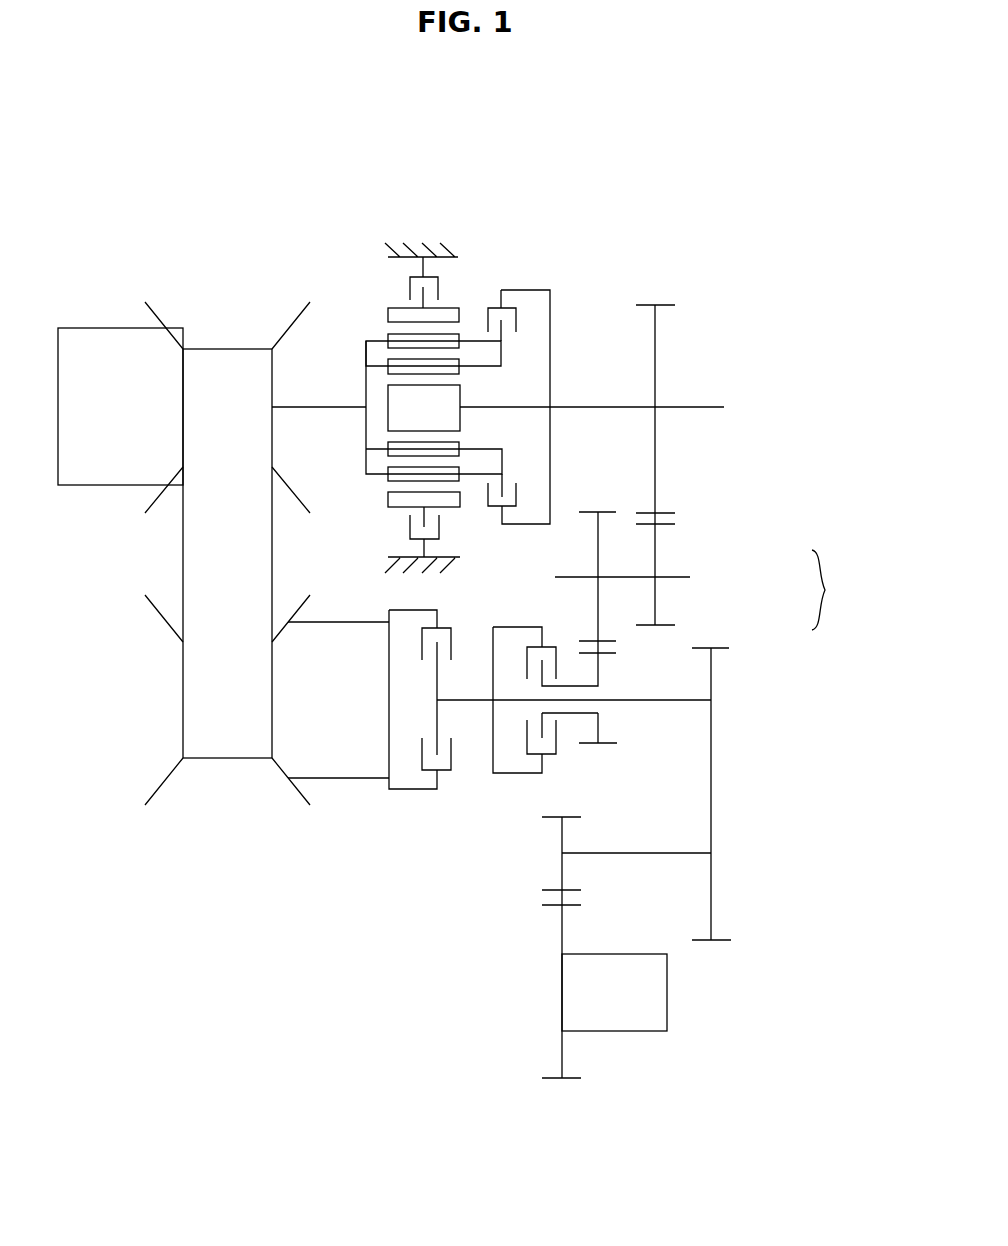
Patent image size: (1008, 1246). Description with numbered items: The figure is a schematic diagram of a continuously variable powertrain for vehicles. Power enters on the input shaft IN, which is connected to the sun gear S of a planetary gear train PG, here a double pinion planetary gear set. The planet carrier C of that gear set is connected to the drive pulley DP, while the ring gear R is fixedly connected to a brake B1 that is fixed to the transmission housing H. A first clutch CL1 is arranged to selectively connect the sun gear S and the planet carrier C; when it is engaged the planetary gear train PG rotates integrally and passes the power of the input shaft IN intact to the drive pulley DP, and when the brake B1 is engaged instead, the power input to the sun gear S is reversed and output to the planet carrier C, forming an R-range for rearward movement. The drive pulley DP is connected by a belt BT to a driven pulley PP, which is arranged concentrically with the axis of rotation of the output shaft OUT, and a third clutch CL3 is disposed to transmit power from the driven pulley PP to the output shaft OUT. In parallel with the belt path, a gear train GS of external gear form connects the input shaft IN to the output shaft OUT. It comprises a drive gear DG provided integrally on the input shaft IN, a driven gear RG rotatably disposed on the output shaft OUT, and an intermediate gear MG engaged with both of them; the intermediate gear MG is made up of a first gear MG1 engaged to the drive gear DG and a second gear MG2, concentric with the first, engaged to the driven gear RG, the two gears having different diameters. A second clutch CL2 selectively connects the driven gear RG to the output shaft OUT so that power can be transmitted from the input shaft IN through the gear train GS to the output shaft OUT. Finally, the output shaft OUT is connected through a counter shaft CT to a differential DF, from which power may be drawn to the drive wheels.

The drive pulley DP is at (158, 316).
The belt BT is at (193, 548).
The driven pulley PP is at (158, 786).
The planetary gear train PG is at (377, 332).
The ring gear R is at (389, 308).
The planet carrier C is at (367, 354).
The sun gear S is at (453, 394).
The brake B1 is at (406, 283).
The transmission housing H is at (412, 238).
The first clutch CL1 is at (492, 306).
The input shaft IN is at (692, 407).
The gear train GS is at (661, 304).
The drive gear DG is at (665, 512).
The first gear MG1 is at (667, 527).
The second gear MG2 is at (612, 642).
The intermediate gear MG is at (841, 590).
The output shaft OUT is at (677, 700).
The third clutch CL3 is at (422, 769).
The second clutch CL2 is at (524, 757).
The driven gear RG is at (610, 747).
The counter shaft CT is at (715, 853).
The differential DF is at (667, 997).